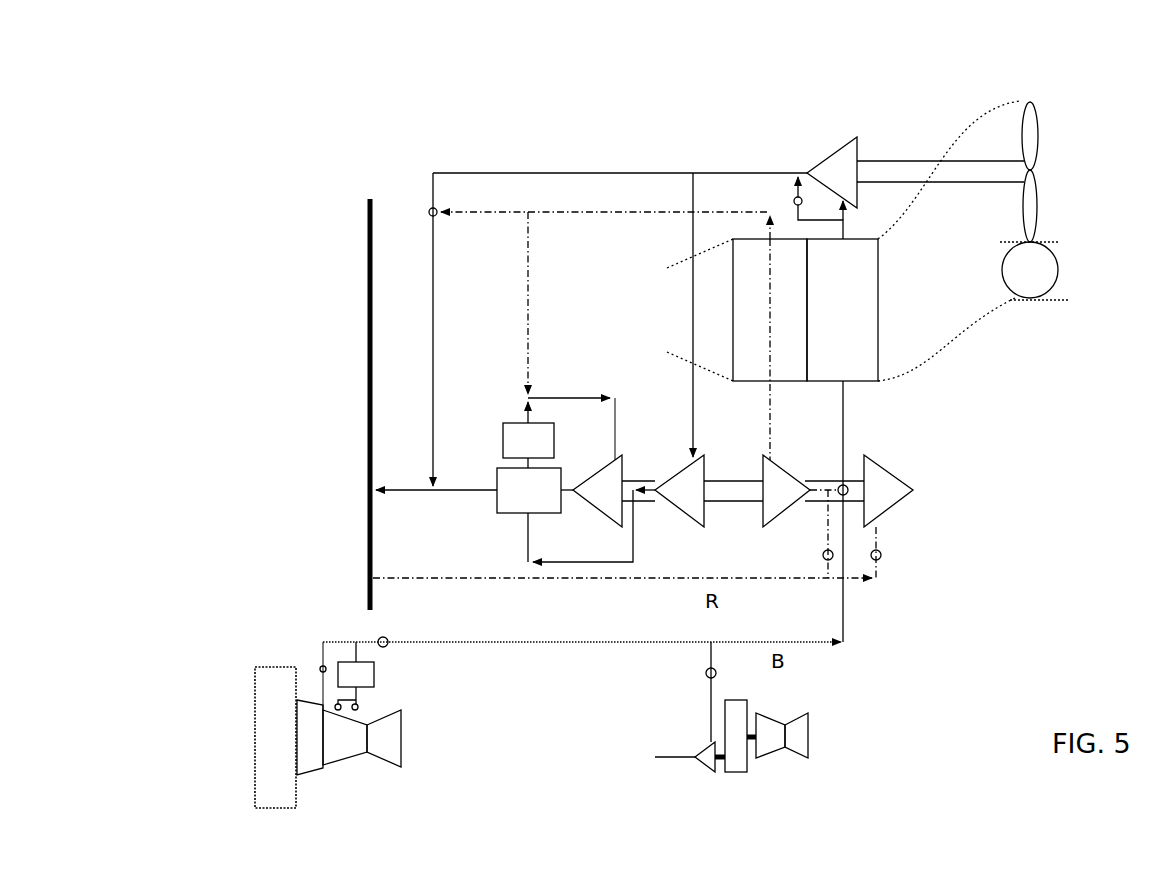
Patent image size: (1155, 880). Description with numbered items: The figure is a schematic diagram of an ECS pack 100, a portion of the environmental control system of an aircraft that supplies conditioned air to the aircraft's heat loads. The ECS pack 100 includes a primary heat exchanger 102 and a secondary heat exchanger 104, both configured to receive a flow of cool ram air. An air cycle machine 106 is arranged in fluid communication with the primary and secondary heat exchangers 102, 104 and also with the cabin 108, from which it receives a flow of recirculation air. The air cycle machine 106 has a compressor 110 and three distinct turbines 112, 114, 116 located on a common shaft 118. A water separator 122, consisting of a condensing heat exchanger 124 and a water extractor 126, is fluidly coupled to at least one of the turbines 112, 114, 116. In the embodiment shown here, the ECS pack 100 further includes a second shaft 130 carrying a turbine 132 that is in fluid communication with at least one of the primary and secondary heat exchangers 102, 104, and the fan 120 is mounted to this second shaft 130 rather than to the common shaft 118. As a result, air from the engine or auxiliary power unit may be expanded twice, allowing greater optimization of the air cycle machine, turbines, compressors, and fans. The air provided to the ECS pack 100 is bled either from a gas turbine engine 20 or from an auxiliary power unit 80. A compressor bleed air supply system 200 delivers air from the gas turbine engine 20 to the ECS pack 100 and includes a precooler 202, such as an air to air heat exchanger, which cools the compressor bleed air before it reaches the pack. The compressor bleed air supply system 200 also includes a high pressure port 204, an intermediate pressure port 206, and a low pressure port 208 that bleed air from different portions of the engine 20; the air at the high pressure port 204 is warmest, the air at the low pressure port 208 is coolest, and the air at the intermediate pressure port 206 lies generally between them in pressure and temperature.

The ECS pack 100 is at (340, 139).
The primary heat exchanger 102 is at (862, 381).
The secondary heat exchanger 104 is at (748, 239).
The air cycle machine 106 is at (930, 526).
The cabin 108 is at (368, 252).
The compressor 110 is at (778, 515).
The turbine 112 is at (672, 503).
The turbine 114 is at (600, 470).
The turbine 116 is at (887, 513).
The common shaft 118 is at (863, 503).
The fan 120 is at (1034, 142).
The water separator 122 is at (438, 498).
The condensing heat exchanger 124 is at (497, 500).
The water extractor 126 is at (503, 437).
The second shaft 130 is at (893, 178).
The turbine 132 is at (833, 153).
The gas turbine engine 20 is at (230, 673).
The compressor bleed air supply system 200 is at (376, 700).
The precooler 202 is at (358, 672).
The high pressure port 204 is at (356, 712).
The intermediate pressure port 206 is at (337, 711).
The low pressure port 208 is at (321, 667).
The auxiliary power unit 80 is at (781, 774).